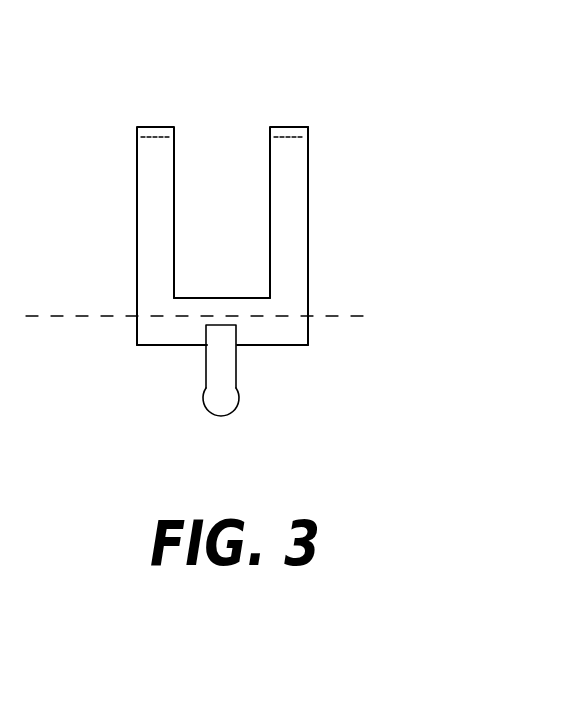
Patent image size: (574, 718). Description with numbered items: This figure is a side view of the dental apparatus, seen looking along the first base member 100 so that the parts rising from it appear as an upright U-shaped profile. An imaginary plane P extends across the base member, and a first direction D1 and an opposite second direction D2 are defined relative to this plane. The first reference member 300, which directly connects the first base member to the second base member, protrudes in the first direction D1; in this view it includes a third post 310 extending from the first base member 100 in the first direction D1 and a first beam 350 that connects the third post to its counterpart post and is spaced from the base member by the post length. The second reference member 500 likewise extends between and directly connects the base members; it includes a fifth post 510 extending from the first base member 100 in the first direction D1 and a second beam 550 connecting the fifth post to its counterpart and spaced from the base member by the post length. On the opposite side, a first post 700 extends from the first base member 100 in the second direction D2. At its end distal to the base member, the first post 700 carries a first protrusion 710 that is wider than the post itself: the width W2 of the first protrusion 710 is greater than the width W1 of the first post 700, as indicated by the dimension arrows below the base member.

The first base member 100 is at (248, 327).
The first reference member 300 is at (314, 104).
The third post 310 is at (297, 238).
The first beam 350 is at (298, 132).
The second reference member 500 is at (126, 90).
The fifth post 510 is at (165, 215).
The second beam 550 is at (167, 134).
The first post 700 is at (237, 353).
The first protrusion 710 is at (238, 397).
The imaginary plane P is at (107, 316).
The first direction D1 is at (58, 250).
The second direction D2 is at (58, 316).
The width of the first post W1 is at (280, 369).
The width of the first protrusion W2 is at (280, 424).